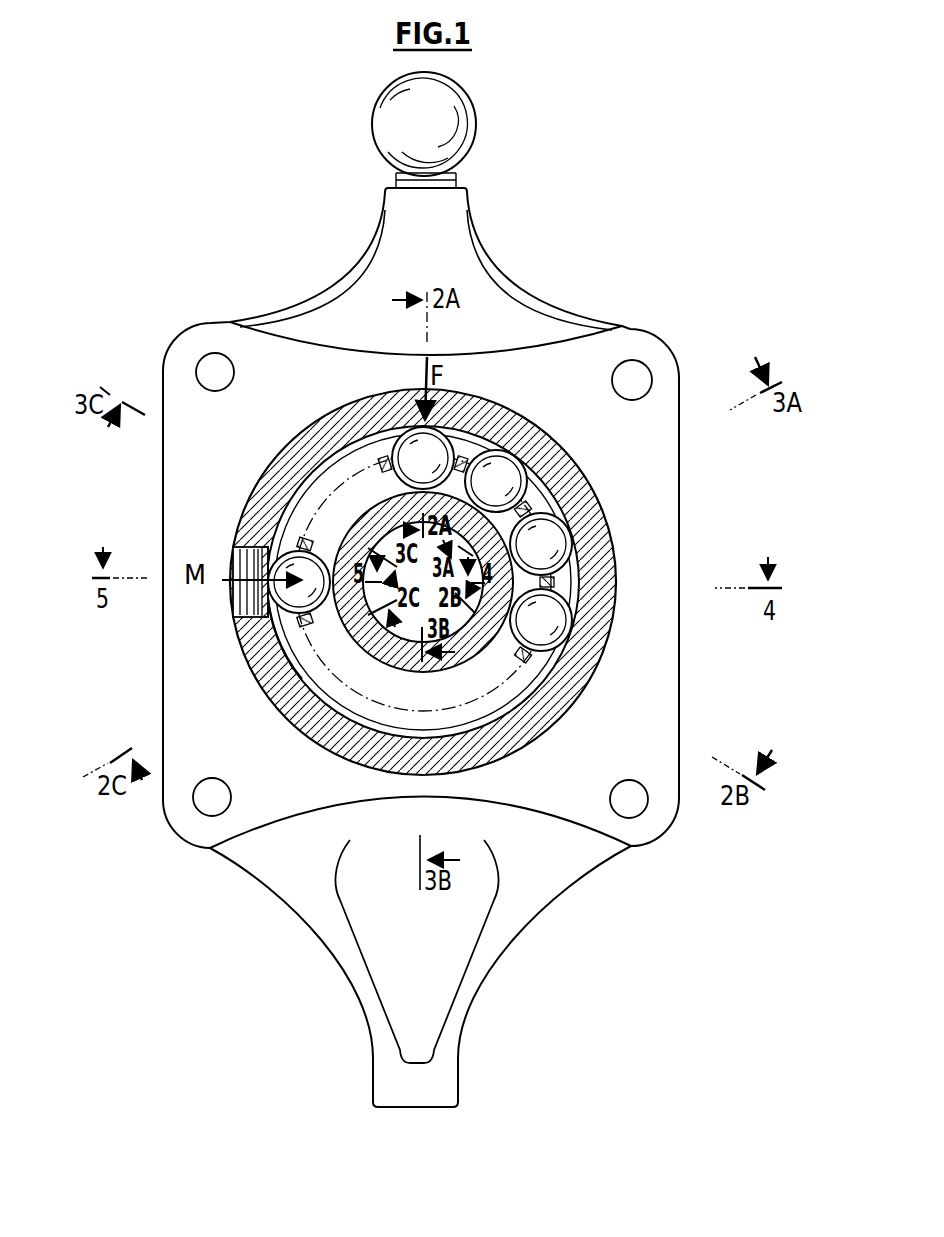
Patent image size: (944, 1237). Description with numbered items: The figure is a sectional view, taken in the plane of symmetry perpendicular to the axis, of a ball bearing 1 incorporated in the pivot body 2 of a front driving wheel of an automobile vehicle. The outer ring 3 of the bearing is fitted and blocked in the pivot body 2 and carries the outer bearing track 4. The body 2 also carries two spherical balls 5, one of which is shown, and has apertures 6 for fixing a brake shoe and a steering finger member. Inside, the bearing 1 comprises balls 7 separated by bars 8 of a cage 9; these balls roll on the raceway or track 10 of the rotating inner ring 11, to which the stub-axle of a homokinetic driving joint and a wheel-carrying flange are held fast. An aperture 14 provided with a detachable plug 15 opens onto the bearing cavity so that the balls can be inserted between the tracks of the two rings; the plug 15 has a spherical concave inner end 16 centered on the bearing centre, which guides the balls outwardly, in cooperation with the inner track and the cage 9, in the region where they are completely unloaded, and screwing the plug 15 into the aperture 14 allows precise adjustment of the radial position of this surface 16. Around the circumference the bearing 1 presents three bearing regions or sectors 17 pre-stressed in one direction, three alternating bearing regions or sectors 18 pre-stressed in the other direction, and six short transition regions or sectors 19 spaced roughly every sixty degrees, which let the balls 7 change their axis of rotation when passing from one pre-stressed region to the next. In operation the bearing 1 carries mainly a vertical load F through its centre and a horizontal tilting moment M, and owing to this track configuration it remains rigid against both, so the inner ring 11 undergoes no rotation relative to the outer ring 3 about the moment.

The ball bearing 1 is at (418, 578).
The pivot body 2 is at (545, 272).
The outer ring 3 is at (556, 696).
The outer bearing track 4 is at (514, 732).
The spherical ball 5 is at (457, 134).
The apertures 6 is at (632, 814).
The balls 7 is at (446, 443).
The bars 8 is at (386, 455).
The cage 9 is at (512, 468).
The inner raceway or track 10 is at (286, 666).
The rotating inner ring 11 is at (380, 650).
The aperture 14 is at (242, 603).
The detachable plug 15 is at (246, 568).
The spherical concave inner end 16 is at (295, 608).
The bearing regions or sectors 17 is at (396, 436).
The bearing regions or sectors 18 is at (318, 482).
The transition regions or sectors 19 is at (358, 458).